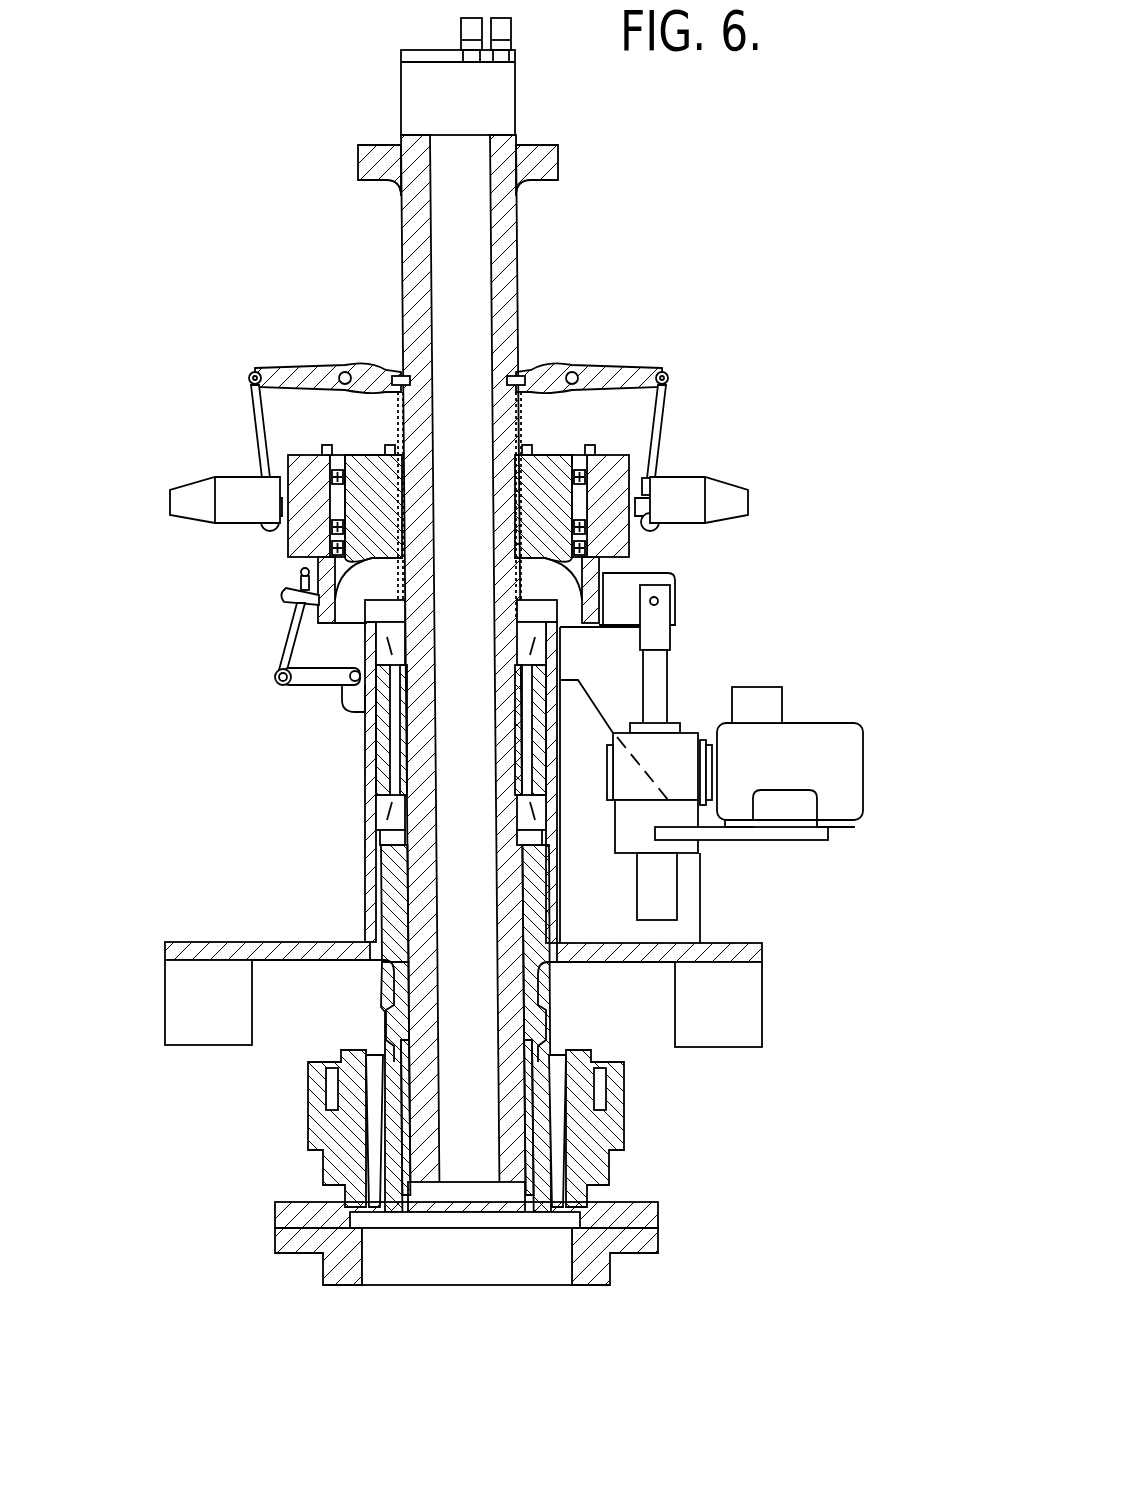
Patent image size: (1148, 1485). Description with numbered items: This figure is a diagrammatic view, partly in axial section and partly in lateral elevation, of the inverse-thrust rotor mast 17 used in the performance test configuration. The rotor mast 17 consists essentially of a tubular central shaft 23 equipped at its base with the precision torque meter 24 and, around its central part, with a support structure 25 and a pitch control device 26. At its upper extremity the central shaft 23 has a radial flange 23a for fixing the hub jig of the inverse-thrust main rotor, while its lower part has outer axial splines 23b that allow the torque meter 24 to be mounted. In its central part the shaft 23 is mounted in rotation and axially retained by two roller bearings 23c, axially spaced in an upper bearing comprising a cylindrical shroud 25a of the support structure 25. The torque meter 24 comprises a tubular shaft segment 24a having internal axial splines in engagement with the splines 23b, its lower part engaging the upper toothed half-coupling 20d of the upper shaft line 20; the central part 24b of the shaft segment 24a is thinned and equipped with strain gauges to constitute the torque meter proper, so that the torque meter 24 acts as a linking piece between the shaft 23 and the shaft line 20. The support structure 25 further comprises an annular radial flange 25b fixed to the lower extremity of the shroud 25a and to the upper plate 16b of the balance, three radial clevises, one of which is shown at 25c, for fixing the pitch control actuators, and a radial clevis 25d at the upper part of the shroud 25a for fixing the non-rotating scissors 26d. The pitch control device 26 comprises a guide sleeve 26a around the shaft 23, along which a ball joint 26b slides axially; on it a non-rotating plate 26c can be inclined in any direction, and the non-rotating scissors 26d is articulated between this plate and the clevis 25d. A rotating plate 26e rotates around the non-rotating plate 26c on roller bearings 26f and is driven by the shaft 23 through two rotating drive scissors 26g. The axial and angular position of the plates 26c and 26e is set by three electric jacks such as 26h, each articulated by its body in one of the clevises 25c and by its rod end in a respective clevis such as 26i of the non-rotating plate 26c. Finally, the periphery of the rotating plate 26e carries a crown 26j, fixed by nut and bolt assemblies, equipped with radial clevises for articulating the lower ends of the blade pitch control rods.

The upper plate 16b is at (730, 1003).
The inverse-thrust rotor mast 17 is at (596, 347).
The upper shaft line 20 is at (322, 1273).
The upper toothed half-coupling 20d is at (568, 1155).
The tubular central shaft 23 is at (410, 290).
The radial flange 23a is at (545, 160).
The outer axial splines 23b is at (518, 1078).
The roller bearings 23c is at (370, 826).
The precision torque meter 24 is at (382, 1025).
The tubular shaft segment 24a is at (405, 909).
The central part of the shaft segment 24b is at (540, 990).
The support structure 25 is at (362, 764).
The cylindrical shroud 25a is at (370, 787).
The annular radial flange 25b is at (222, 948).
The radial clevis 25c is at (688, 888).
The radial clevis 25d is at (357, 707).
The pitch control device 26 is at (700, 466).
The guide sleeve 26a is at (520, 420).
The ball joint 26b is at (373, 503).
The non-rotating plate 26c is at (302, 578).
The non-rotating scissors 26d is at (285, 637).
The rotating plate 26e is at (263, 507).
The roller bearings 26f is at (620, 545).
The rotating drive scissors 26g is at (257, 422).
The electric jack 26h is at (655, 682).
The clevis 26i is at (622, 595).
The crown 26j is at (722, 505).